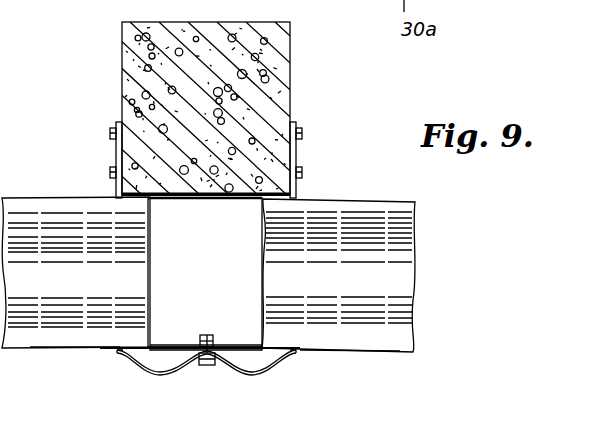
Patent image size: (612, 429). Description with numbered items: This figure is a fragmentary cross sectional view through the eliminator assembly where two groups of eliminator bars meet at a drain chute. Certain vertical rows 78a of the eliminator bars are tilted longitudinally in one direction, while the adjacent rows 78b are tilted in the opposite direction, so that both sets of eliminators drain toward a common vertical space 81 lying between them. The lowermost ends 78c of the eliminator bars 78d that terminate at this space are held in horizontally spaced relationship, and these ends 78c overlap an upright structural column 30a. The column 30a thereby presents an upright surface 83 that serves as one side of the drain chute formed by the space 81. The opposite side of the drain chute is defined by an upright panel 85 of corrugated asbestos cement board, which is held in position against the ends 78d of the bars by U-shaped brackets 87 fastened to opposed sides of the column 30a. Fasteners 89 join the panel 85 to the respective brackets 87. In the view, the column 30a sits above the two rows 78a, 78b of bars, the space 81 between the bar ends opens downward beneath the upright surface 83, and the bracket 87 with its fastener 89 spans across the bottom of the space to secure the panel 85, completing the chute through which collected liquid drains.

The upright structural column 30a is at (132, 70).
The vertical rows of eliminator bars 78a is at (52, 198).
The adjacent rows of eliminator bars 78b is at (362, 200).
The lowermost ends of the eliminator bars 78c is at (262, 251).
The eliminator bars 78d is at (72, 340).
The common vertical space 81 is at (202, 272).
The upright surface 83 is at (196, 196).
The upright panel 85 is at (181, 371).
The U-shaped brackets 87 is at (175, 345).
The fasteners 89 is at (208, 368).